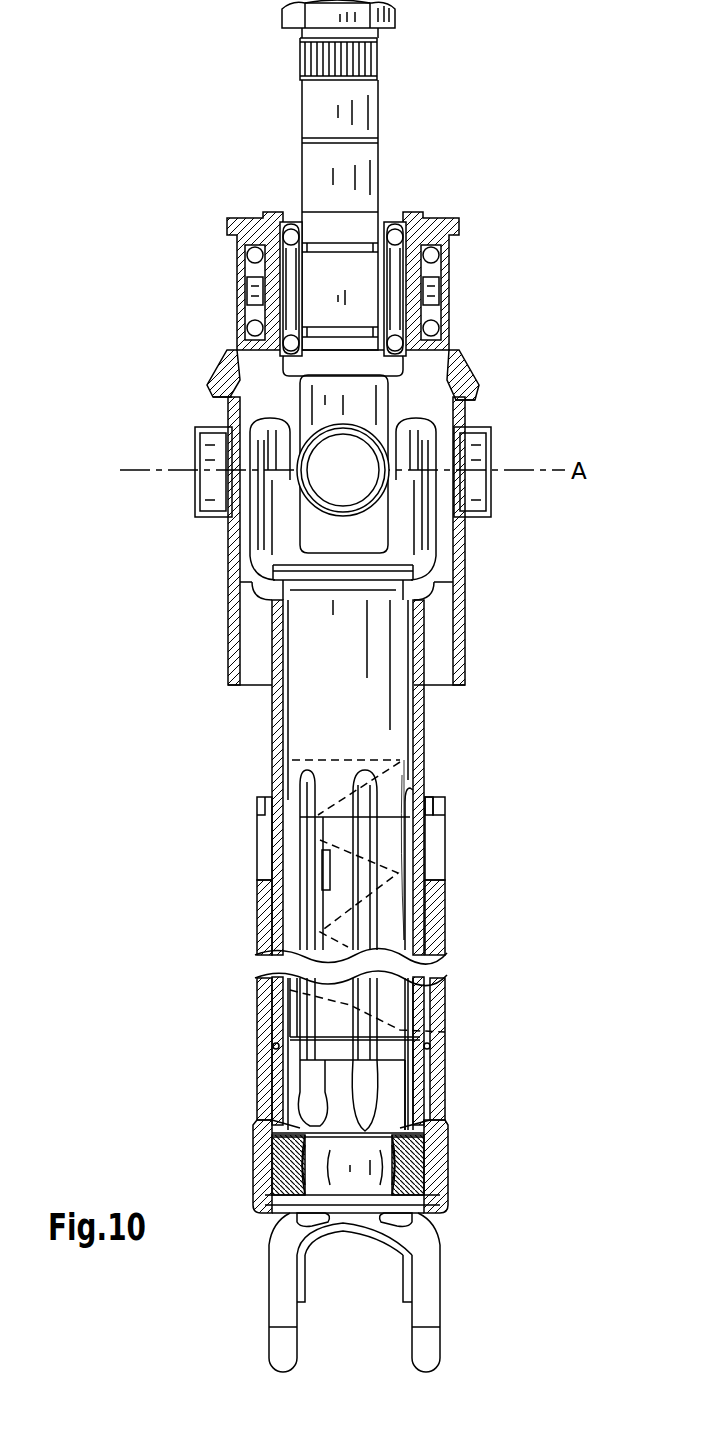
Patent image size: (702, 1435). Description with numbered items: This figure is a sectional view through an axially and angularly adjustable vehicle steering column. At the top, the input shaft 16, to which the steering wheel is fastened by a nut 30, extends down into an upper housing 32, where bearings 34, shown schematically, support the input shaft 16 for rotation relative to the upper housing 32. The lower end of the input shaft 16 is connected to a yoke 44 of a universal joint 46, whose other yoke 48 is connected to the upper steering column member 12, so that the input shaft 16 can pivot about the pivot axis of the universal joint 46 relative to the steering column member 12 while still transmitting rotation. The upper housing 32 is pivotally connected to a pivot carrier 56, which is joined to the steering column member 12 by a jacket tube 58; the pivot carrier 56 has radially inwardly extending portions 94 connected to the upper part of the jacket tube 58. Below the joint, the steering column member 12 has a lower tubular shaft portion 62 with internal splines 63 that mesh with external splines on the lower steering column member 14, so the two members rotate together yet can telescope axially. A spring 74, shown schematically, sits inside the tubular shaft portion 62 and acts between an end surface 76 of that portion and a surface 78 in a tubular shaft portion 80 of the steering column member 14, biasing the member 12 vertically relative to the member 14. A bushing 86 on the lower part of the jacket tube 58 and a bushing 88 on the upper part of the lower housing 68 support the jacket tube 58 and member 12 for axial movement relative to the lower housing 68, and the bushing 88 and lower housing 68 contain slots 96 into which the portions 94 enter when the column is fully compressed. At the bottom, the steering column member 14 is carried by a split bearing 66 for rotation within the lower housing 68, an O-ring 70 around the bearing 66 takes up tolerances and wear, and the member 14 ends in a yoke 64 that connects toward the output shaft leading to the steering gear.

The nut 30 is at (398, 1).
The input shaft 16 is at (347, 143).
The bearings 34 is at (290, 245).
The upper housing 32 is at (445, 358).
The yoke 44 is at (327, 450).
The universal joint 46 is at (300, 432).
The yoke 48 is at (280, 537).
The pivot carrier 56 is at (465, 612).
The radially inwardly extending portions 94 is at (260, 658).
The steering column member 12 is at (340, 713).
The jacket tube 58 is at (425, 772).
The end surface 76 is at (292, 779).
The tubular shaft portion 62 is at (337, 880).
The internal splines 63 is at (307, 890).
The spring 74 is at (258, 948).
The slots 96 is at (430, 853).
The bushing 88 is at (430, 811).
The lower housing 68 is at (439, 1076).
The O-ring 70 is at (432, 1163).
The split bearing 66 is at (432, 1146).
The steering column member 14 is at (337, 1067).
The tubular shaft portion 80 is at (333, 1029).
The surface 78 is at (445, 1032).
The bushing 86 is at (273, 1045).
The yoke 64 is at (397, 1023).